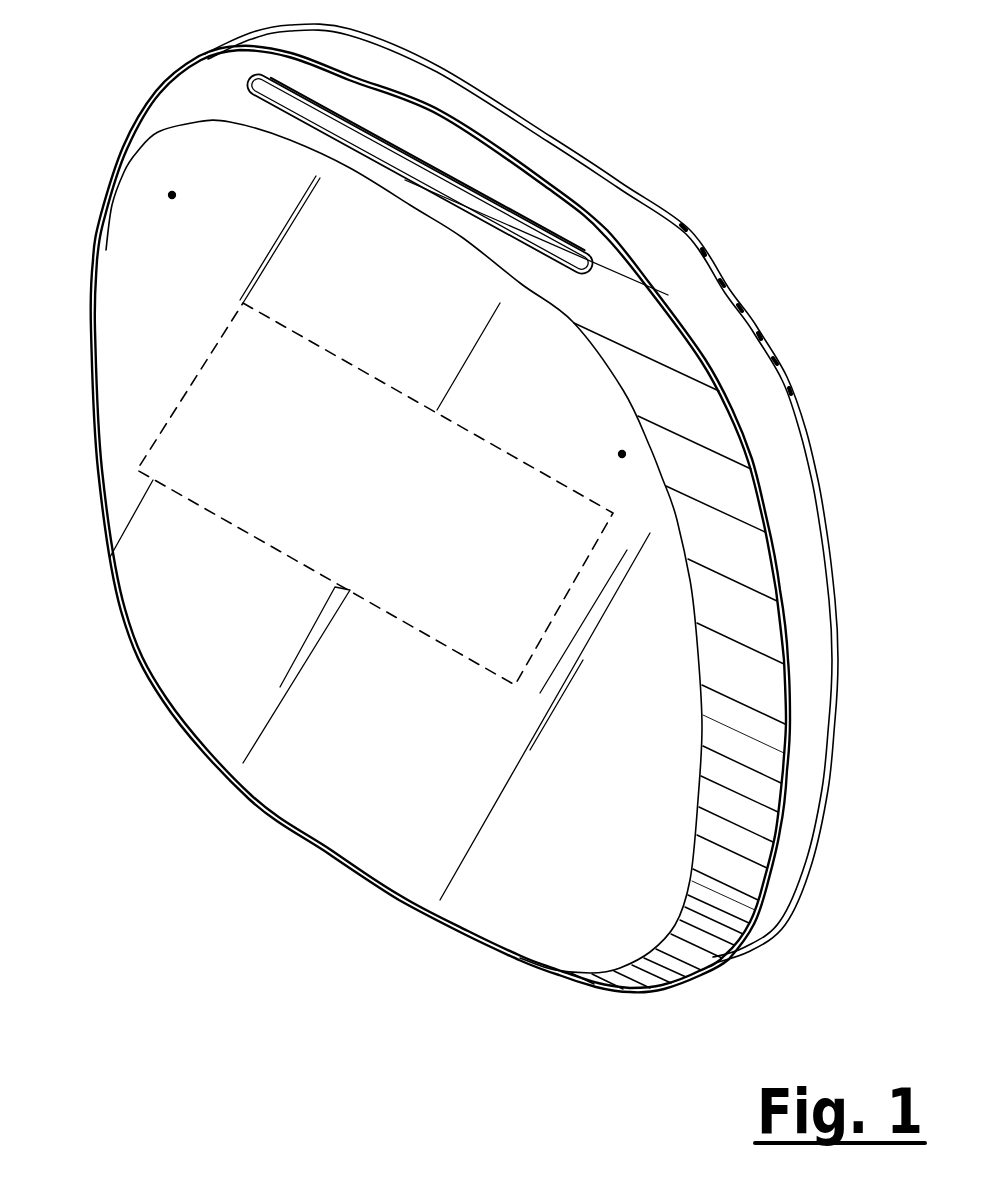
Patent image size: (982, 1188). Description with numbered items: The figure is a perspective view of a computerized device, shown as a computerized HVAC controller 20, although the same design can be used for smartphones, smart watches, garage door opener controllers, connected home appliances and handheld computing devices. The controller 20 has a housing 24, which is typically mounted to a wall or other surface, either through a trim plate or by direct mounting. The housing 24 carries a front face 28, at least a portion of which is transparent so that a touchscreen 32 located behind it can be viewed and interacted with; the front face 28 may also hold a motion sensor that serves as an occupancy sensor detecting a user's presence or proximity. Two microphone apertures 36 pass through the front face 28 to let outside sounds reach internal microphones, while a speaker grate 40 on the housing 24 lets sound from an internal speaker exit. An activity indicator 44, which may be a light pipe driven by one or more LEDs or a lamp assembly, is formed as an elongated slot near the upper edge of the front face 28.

The computerized HVAC controller 20 is at (460, 496).
The housing 24 is at (760, 407).
The front face 28 is at (275, 790).
The touchscreen 32 is at (402, 512).
The microphone apertures 36 is at (158, 183).
The speaker grate 40 is at (720, 252).
The activity indicator 44 is at (385, 135).